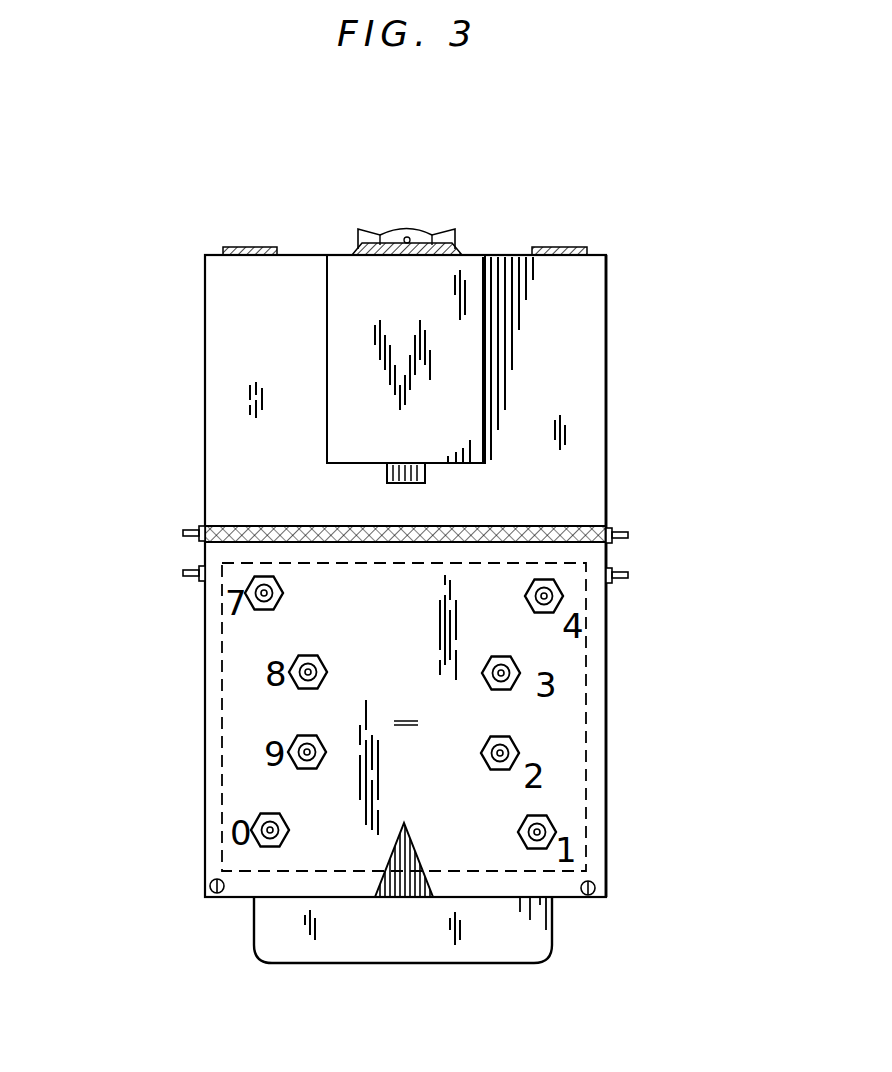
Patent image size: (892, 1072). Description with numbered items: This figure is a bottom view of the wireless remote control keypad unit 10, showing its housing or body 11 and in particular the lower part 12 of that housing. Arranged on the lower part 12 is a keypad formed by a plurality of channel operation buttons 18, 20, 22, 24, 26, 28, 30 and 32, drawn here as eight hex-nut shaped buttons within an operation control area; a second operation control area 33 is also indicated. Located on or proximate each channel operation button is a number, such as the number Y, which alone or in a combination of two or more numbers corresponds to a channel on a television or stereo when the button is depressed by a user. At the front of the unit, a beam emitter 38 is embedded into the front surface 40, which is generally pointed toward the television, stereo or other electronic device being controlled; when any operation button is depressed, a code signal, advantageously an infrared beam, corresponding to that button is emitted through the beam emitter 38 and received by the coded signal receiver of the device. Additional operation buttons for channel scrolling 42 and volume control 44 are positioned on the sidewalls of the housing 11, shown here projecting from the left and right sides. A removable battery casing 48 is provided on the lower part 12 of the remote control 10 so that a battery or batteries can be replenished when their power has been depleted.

The wireless remote control keypad unit 10 is at (132, 193).
The housing or body 11 is at (614, 297).
The lower part 12 is at (226, 488).
The channel operation button 18 is at (252, 826).
The channel operation button 20 is at (556, 830).
The channel operation button 22 is at (289, 748).
The channel operation button 24 is at (519, 749).
The channel operation button 26 is at (290, 668).
The channel operation button 28 is at (520, 670).
The channel operation button 30 is at (246, 580).
The channel operation button 32 is at (563, 595).
The second operation control area 33 is at (404, 717).
The beam emitter 38 is at (407, 238).
The front surface 40 is at (305, 253).
The channel scrolling buttons 42 is at (180, 515).
The volume control buttons 44 is at (632, 517).
The removable battery casing 48 is at (485, 392).
The number Y is at (556, 777).